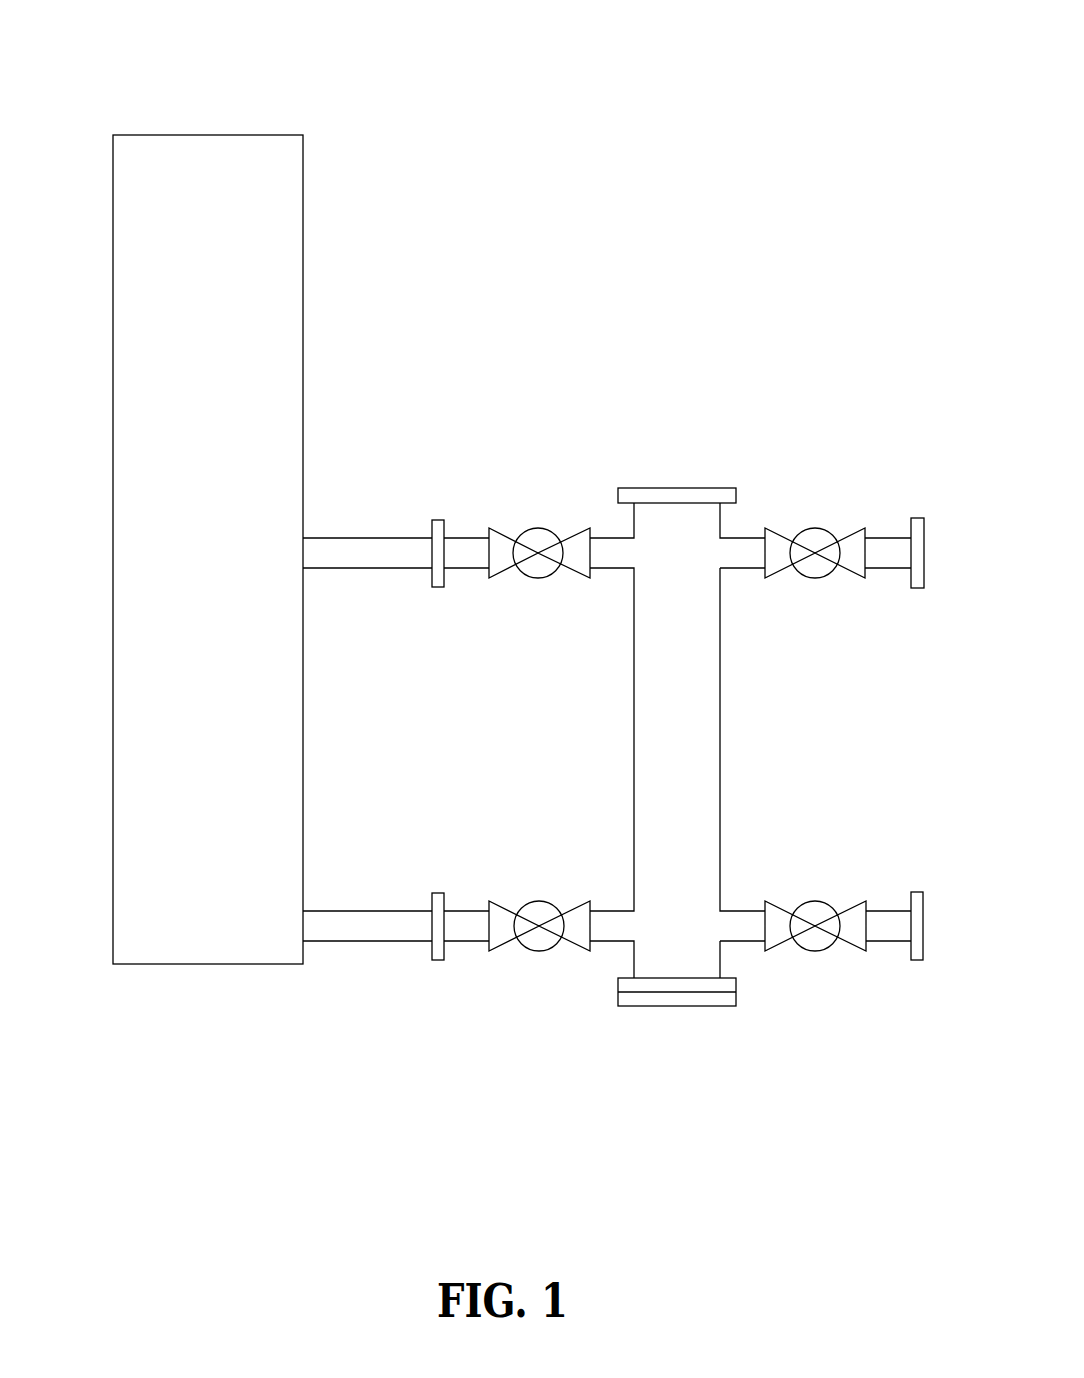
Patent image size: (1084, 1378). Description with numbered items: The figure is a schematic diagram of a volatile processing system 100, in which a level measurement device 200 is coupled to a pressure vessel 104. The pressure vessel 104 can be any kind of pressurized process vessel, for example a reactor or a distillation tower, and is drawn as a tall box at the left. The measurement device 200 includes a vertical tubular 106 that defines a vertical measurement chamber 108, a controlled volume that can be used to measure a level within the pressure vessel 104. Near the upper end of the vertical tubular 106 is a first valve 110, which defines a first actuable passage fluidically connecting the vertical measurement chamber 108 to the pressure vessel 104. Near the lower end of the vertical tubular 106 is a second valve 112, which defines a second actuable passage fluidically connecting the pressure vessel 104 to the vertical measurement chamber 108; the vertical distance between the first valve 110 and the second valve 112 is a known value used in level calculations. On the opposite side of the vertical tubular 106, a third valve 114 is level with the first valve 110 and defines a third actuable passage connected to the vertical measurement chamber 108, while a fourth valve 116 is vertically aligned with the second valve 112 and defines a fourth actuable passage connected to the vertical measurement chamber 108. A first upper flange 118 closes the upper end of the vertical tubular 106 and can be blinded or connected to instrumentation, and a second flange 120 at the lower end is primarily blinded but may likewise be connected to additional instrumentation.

The volatile processing system 100 is at (868, 96).
The level measurement device 200 is at (866, 370).
The pressure vessel 104 is at (115, 304).
The vertical tubular 106 is at (634, 735).
The vertical measurement chamber 108 is at (694, 766).
The first valve 110 is at (538, 528).
The second valve 112 is at (539, 951).
The third valve 114 is at (815, 528).
The fourth valve 116 is at (815, 951).
The first upper flange 118 is at (708, 487).
The second flange 120 is at (632, 1007).